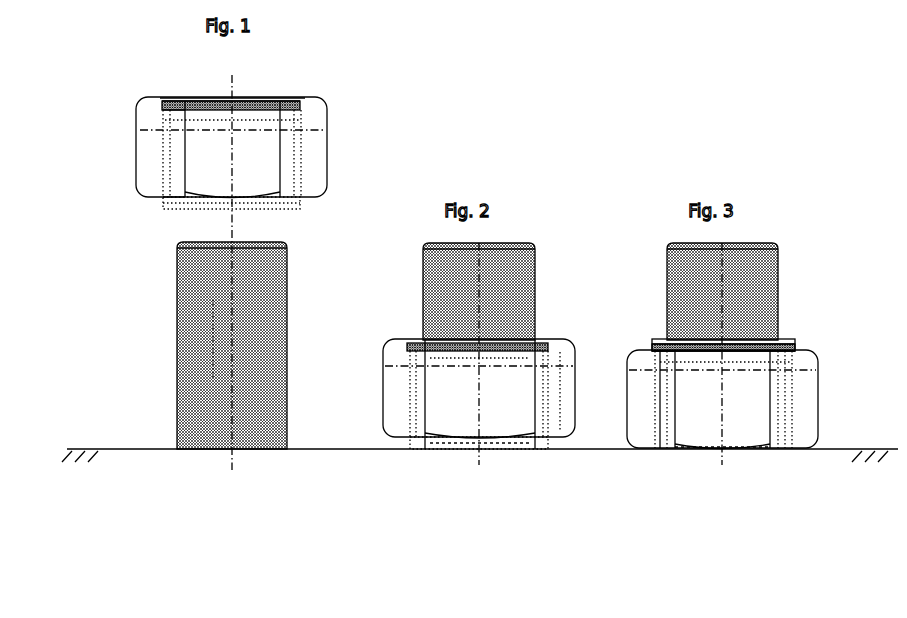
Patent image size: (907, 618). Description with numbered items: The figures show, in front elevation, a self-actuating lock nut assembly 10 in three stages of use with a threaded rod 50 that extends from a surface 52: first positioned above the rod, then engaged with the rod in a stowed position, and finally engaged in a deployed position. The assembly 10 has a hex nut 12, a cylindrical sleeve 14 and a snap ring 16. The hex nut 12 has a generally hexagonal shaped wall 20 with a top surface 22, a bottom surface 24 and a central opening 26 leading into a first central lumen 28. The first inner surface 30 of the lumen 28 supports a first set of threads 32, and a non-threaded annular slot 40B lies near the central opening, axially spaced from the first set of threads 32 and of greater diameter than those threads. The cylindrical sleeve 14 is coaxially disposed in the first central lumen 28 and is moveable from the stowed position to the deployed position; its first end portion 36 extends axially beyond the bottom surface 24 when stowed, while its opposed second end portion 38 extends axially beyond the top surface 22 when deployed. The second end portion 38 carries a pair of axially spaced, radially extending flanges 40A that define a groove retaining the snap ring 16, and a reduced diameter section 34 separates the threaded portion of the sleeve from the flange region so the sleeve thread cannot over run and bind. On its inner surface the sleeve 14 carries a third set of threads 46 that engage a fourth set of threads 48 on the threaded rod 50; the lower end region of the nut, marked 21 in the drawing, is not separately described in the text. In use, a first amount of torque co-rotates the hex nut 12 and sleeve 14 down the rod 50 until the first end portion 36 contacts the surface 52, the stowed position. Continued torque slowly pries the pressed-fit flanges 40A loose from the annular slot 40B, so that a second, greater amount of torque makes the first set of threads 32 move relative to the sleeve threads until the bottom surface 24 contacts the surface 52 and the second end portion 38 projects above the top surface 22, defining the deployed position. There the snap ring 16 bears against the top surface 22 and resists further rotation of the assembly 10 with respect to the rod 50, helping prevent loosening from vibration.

In FIG. 1, the self-actuating lock nut assembly 10 is at (137, 142).
In FIG. 2, the self-actuating lock nut assembly 10 is at (382, 338).
In FIG. 3, the self-actuating lock nut assembly 10 is at (807, 382).
In FIG. 1, the hex nut 12 is at (313, 168).
In FIG. 2, the hex nut 12 is at (567, 417).
In FIG. 3, the hex nut 12 is at (640, 418).
In FIG. 1, the cylindrical sleeve 14 is at (278, 190).
In FIG. 2, the cylindrical sleeve 14 is at (548, 403).
In FIG. 3, the cylindrical sleeve 14 is at (618, 378).
In FIG. 1, the snap ring 16 is at (207, 98).
In FIG. 3, the snap ring 16 is at (800, 347).
In FIG. 1, the hexagonal shaped wall 20 is at (320, 130).
In FIG. 1, the lower end 21 is at (207, 204).
In FIG. 1, the top surface 22 is at (308, 98).
In FIG. 3, the top surface 22 is at (803, 348).
In FIG. 1, the bottom surface 24 is at (300, 199).
In FIG. 2, the bottom surface 24 is at (557, 440).
In FIG. 3, the bottom surface 24 is at (743, 452).
In FIG. 1, the central opening 26 is at (232, 98).
In FIG. 1, the first central lumen 28 is at (243, 145).
In FIG. 1, the first inner surface 30 is at (185, 168).
In FIG. 1, the first set of threads 32 is at (293, 133).
In FIG. 3, the first set of threads 32 is at (790, 427).
In FIG. 1, the reduced diameter section 34 is at (170, 123).
In FIG. 2, the reduced diameter section 34 is at (410, 367).
In FIG. 3, the reduced diameter section 34 is at (662, 363).
In FIG. 1, the first end portion 36 is at (262, 194).
In FIG. 2, the first end portion 36 is at (467, 452).
In FIG. 3, the first end portion 36 is at (755, 484).
In FIG. 3, the second end portion 38 is at (787, 338).
In FIG. 1, the radially extending flanges 40A is at (310, 100).
In FIG. 1, the non-threaded annular slot 40B is at (377, 63).
In FIG. 3, the third set of threads 46 is at (777, 405).
In FIG. 1, the fourth set of threads 48 is at (178, 358).
In FIG. 2, the fourth set of threads 48 is at (527, 270).
In FIG. 3, the fourth set of threads 48 is at (780, 272).
In FIG. 1, the threaded rod 50 is at (213, 338).
In FIG. 2, the threaded rod 50 is at (457, 283).
In FIG. 3, the threaded rod 50 is at (693, 283).
In FIG. 1, the surface 52 is at (113, 449).
In FIG. 3, the surface 52 is at (828, 450).